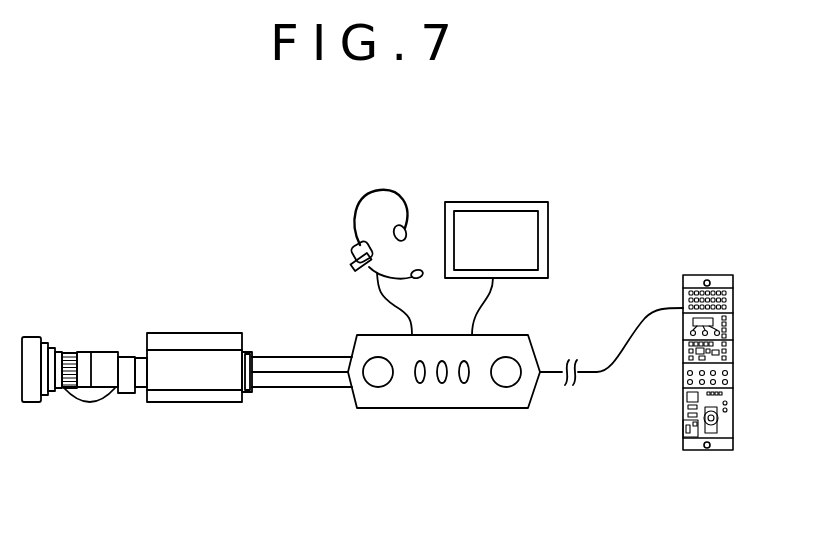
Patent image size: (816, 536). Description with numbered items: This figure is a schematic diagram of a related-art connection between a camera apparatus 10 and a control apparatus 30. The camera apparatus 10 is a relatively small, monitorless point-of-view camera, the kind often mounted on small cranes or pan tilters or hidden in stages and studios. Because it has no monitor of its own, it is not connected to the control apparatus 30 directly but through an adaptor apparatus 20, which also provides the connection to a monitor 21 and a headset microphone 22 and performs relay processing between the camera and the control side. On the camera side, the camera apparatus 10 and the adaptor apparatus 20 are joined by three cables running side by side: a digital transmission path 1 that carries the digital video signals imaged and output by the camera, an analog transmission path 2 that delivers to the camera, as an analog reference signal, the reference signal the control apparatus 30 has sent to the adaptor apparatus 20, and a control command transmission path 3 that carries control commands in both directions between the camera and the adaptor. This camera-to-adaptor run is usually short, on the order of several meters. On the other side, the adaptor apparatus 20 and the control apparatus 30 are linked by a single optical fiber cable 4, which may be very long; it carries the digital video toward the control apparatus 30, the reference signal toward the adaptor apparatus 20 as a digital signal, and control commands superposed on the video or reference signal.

The digital transmission path 1 is at (283, 355).
The analog transmission path 2 is at (293, 374).
The control command transmission path 3 is at (325, 389).
The optical fiber cable 4 is at (550, 378).
The camera apparatus 10 is at (193, 405).
The adaptor apparatus 20 is at (440, 410).
The monitor 21 is at (497, 200).
The headset microphone 22 is at (378, 187).
The control apparatus 30 is at (707, 275).